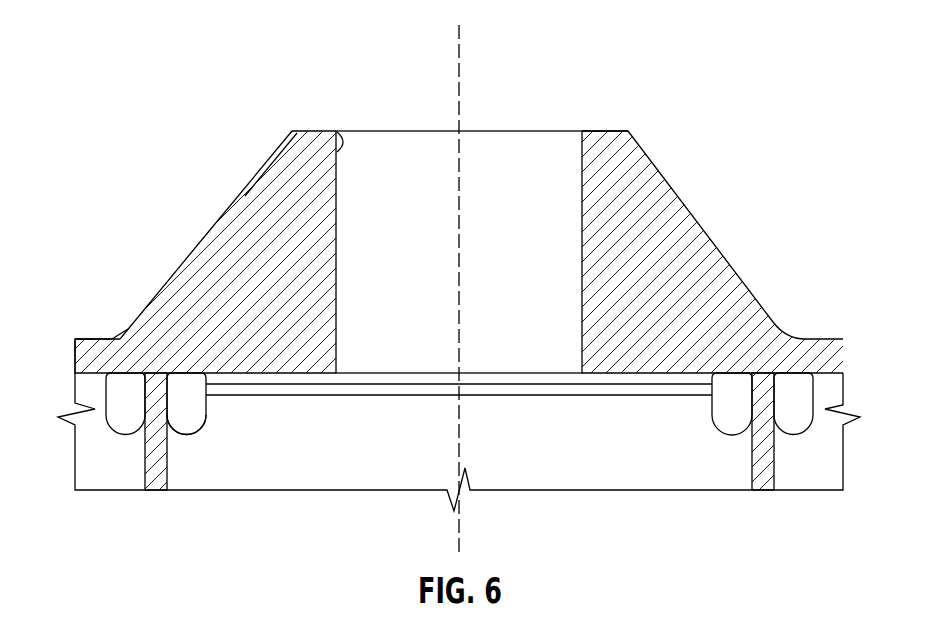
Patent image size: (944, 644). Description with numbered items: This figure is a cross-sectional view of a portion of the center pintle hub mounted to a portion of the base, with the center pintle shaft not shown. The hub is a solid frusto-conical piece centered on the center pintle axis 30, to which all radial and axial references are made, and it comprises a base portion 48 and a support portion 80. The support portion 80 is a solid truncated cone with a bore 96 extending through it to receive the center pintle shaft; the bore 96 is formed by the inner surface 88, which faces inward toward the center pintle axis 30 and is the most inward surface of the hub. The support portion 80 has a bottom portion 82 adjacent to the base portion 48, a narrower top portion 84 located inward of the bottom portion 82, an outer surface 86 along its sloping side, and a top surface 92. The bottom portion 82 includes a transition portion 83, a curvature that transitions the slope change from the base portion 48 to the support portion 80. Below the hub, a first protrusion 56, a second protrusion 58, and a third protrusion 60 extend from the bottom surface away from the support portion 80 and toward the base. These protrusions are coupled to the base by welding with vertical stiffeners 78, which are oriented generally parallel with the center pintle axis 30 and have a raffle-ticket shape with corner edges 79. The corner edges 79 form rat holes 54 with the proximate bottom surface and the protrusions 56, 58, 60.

The center pintle axis 30 is at (461, 60).
The base portion 48 is at (88, 357).
The rat hole 54 is at (185, 395).
The first protrusion 56 is at (148, 388).
The second protrusion 58 is at (491, 397).
The third protrusion 60 is at (768, 392).
The vertical stiffener 78 is at (168, 489).
The corner edge 79 is at (190, 433).
The support portion 80 is at (678, 237).
The bottom portion 82 is at (167, 327).
The transition portion 83 is at (126, 338).
The top portion 84 is at (300, 158).
The outer surface 86 is at (243, 193).
The inner surface 88 is at (338, 131).
The top surface 92 is at (597, 131).
The bore 96 is at (508, 155).